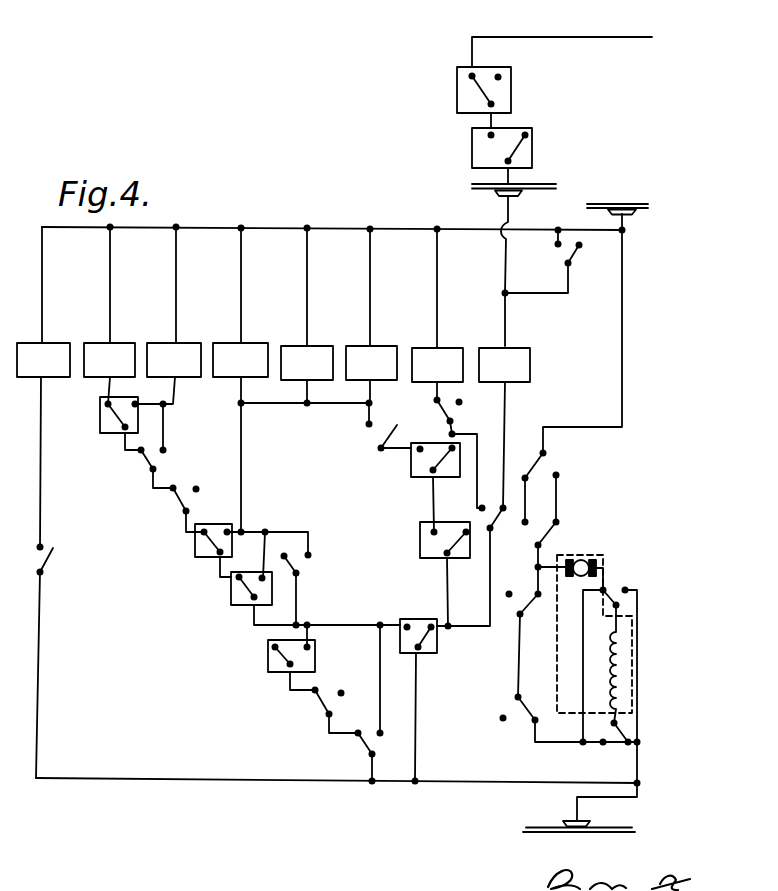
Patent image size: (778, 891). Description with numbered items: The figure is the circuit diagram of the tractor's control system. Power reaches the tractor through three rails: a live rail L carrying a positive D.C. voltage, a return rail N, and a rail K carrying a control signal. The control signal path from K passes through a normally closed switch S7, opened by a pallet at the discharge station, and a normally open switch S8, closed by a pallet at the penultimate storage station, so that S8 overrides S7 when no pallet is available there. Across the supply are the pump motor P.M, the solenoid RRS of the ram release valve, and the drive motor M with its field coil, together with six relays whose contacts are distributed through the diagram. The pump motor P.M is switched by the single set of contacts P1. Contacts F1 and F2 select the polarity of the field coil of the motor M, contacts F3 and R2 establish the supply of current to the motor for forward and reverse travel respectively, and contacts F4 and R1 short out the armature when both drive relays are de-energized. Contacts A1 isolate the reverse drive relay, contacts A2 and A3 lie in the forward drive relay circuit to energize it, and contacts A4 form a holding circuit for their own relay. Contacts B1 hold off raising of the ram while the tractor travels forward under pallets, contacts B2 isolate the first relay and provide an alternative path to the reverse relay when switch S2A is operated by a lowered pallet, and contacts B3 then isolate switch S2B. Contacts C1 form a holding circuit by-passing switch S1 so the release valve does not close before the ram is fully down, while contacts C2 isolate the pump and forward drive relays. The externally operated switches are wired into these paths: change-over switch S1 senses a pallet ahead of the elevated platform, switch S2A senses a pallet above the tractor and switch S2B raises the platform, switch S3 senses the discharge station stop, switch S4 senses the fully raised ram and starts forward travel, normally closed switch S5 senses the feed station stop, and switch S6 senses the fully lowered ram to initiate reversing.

The switch S7 is at (498, 90).
The switch S8 is at (488, 148).
The control rail K is at (541, 186).
The live rail L is at (600, 182).
The contacts A4 is at (552, 263).
The pump motor P.M is at (43, 302).
The solenoid RRS is at (240, 302).
The contacts P1 is at (58, 561).
The switch S4 is at (100, 415).
The contacts A2 is at (158, 437).
The contacts C2 is at (189, 492).
The switch S3 is at (194, 544).
The switch S1 is at (237, 588).
The contacts C1 is at (308, 589).
The contacts B1 is at (389, 426).
The switch S2A is at (413, 460).
The switch S5 is at (428, 539).
The contacts A1 is at (461, 410).
The contacts B2 is at (480, 567).
The switch S6 is at (434, 640).
The switch S2B is at (274, 656).
The contacts B3 is at (330, 695).
The contacts A3 is at (367, 703).
The contacts R2 is at (549, 488).
The contacts F3 is at (559, 545).
The driving motor M is at (556, 641).
The contacts F1 is at (620, 674).
The contacts R1 is at (530, 632).
The contacts F4 is at (560, 718).
The contacts F2 is at (610, 747).
The return rail N is at (548, 831).